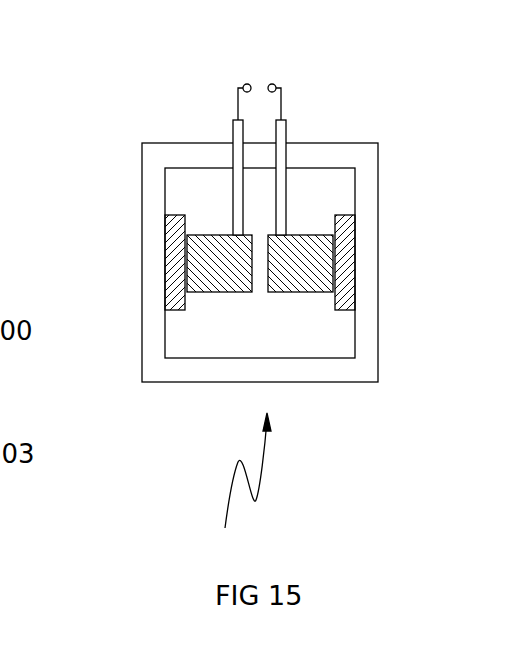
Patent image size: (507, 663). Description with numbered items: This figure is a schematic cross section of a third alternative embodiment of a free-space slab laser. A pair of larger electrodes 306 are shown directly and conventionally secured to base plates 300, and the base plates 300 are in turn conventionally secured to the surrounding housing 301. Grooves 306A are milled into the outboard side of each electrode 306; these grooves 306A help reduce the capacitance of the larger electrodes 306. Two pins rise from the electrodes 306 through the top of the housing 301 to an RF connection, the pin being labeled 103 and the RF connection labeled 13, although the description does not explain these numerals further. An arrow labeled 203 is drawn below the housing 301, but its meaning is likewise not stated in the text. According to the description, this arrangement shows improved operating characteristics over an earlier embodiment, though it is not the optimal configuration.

The RF connector 13 is at (273, 68).
The connector pin 103 is at (282, 130).
The housing 301 is at (153, 208).
The base plates 300 is at (173, 310).
The grooves 306A is at (165, 289).
The electrodes 306 is at (220, 285).
The magnetic field direction 203 is at (234, 488).